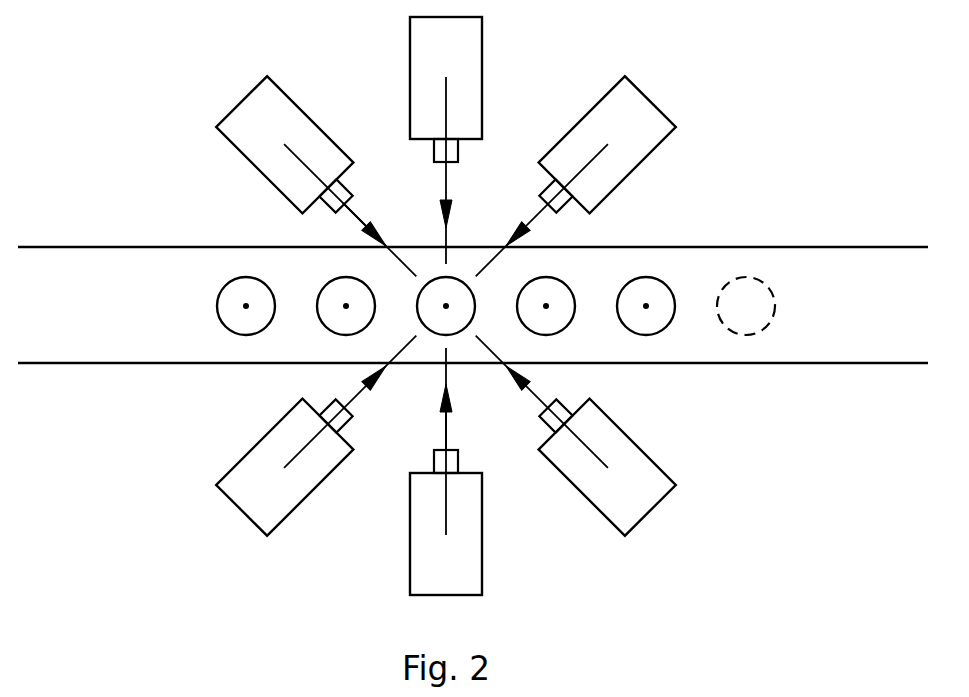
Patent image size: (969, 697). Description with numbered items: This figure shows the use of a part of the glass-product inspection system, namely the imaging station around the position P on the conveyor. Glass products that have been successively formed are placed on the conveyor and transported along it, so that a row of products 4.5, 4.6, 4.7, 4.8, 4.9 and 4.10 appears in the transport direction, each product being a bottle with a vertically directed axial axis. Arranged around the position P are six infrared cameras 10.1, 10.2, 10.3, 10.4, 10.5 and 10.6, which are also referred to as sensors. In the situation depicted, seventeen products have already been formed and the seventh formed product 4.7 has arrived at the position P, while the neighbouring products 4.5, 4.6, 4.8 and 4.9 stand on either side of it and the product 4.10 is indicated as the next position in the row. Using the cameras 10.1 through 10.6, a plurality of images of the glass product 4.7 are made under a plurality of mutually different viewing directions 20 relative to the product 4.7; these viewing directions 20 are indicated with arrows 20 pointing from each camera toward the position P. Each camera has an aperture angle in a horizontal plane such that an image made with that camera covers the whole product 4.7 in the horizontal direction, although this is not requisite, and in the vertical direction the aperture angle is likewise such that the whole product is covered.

The infrared camera 10.1 is at (253, 117).
The infrared camera 10.2 is at (481, 38).
The infrared camera 10.3 is at (638, 117).
The infrared camera 10.4 is at (640, 495).
The infrared camera 10.5 is at (482, 573).
The infrared camera 10.6 is at (252, 495).
The viewing direction 20 is at (355, 213).
The glass product 4.5 is at (227, 277).
The glass product 4.6 is at (327, 277).
The glass product 4.7 is at (457, 277).
The glass product 4.8 is at (565, 283).
The glass product 4.9 is at (665, 283).
The glass product 4.10 is at (765, 283).
The position P is at (445, 309).